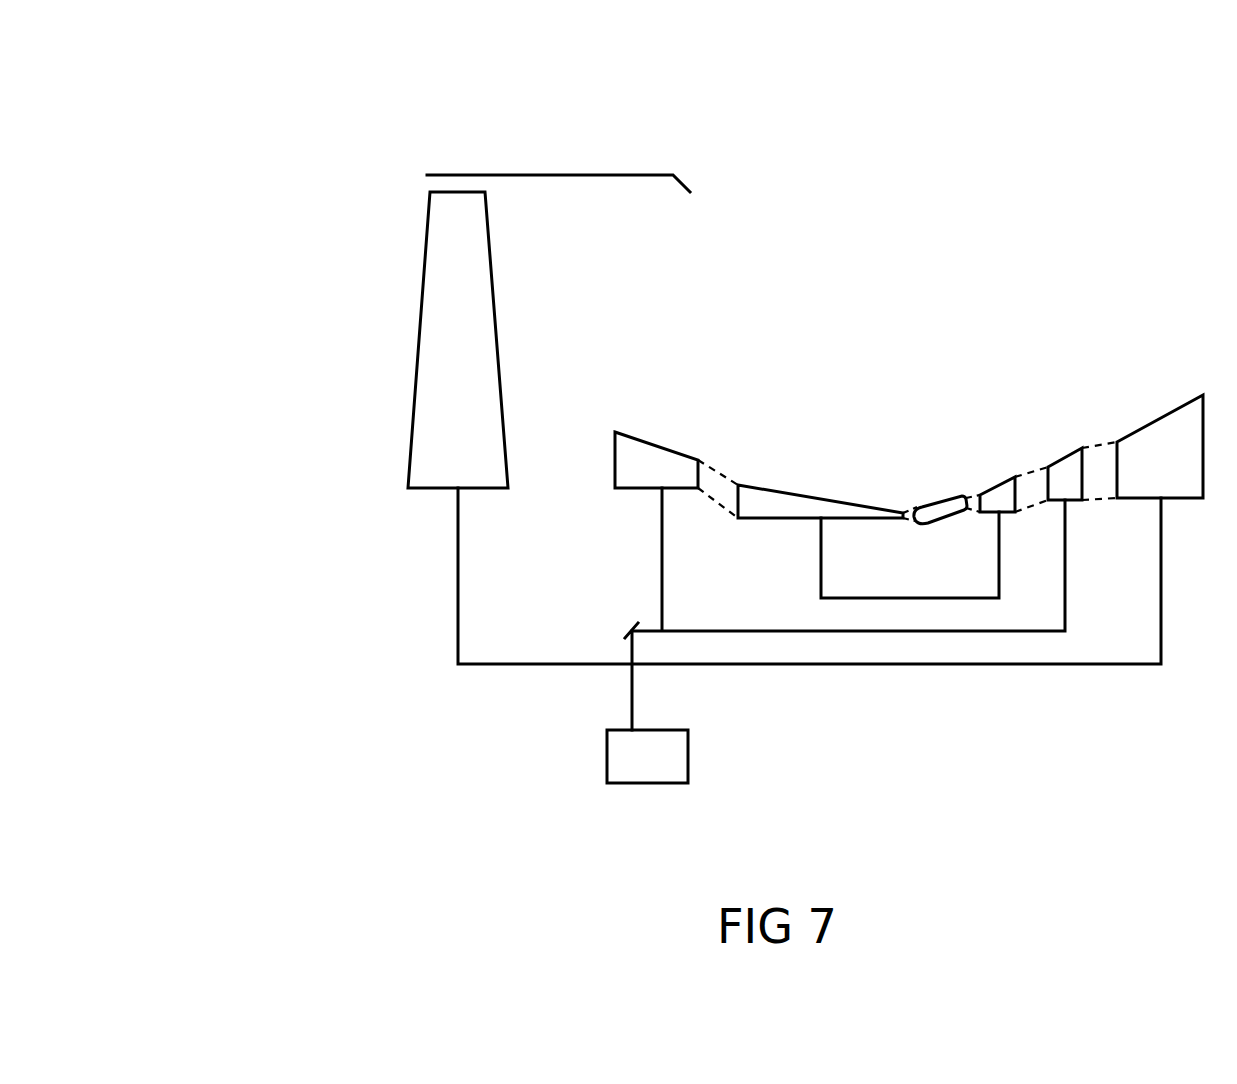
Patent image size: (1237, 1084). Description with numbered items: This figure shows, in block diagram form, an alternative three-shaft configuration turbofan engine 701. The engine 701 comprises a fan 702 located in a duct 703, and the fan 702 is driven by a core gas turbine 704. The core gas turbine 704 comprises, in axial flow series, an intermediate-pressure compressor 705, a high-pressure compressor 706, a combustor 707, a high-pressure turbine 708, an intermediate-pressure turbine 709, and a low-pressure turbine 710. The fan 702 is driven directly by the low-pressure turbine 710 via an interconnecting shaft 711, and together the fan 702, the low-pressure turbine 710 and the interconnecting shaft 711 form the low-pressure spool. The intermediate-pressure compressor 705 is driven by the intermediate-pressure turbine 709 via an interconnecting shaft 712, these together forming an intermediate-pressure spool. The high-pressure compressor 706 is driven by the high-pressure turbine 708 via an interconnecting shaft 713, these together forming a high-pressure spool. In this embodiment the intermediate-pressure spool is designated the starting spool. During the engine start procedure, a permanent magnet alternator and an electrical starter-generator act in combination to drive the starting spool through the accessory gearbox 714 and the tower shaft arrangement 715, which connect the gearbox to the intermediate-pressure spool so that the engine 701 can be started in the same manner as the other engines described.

The turbofan engine 701 is at (266, 84).
The fan 702 is at (440, 215).
The duct 703 is at (665, 174).
The core gas turbine 704 is at (1040, 355).
The intermediate-pressure compressor 705 is at (677, 447).
The high-pressure compressor 706 is at (787, 513).
The combustor 707 is at (925, 500).
The high-pressure turbine 708 is at (990, 487).
The intermediate-pressure turbine 709 is at (1066, 458).
The low-pressure turbine 710 is at (1157, 414).
The interconnecting shaft 711 is at (1161, 595).
The interconnecting shaft 712 is at (1065, 595).
The interconnecting shaft 713 is at (820, 570).
The accessory gearbox 714 is at (607, 778).
The tower shaft arrangement 715 is at (632, 682).